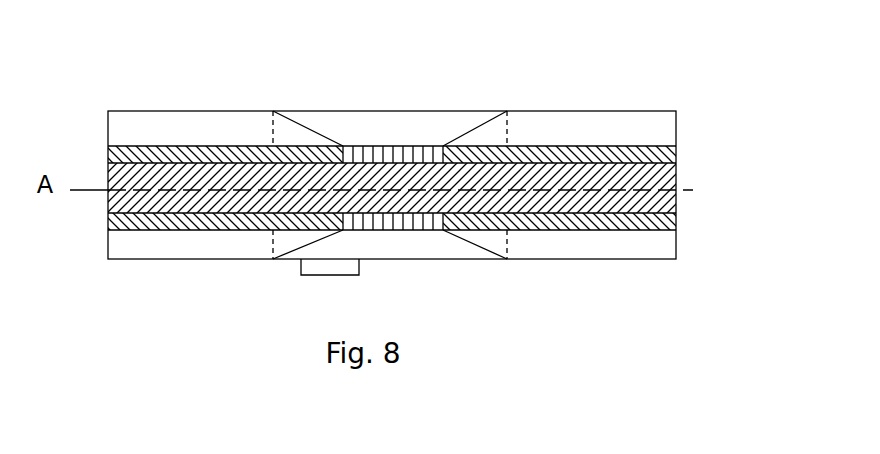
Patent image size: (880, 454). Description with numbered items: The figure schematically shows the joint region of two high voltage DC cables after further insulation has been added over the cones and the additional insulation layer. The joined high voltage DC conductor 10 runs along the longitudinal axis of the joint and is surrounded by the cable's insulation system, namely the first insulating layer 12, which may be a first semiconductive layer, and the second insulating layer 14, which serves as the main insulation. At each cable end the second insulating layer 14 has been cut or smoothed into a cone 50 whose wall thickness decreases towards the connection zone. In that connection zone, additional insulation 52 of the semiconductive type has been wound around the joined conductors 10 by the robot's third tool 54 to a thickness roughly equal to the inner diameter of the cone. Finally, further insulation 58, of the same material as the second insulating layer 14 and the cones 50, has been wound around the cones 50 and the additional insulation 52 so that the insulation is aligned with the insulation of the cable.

The high voltage DC conductor 10 is at (676, 170).
The first insulating layer 12 is at (676, 152).
The second insulating layer 14 is at (672, 247).
The cone 50 is at (283, 133).
The additional insulation 52 is at (398, 205).
The third tool 54 is at (355, 263).
The further insulation 58 is at (365, 130).